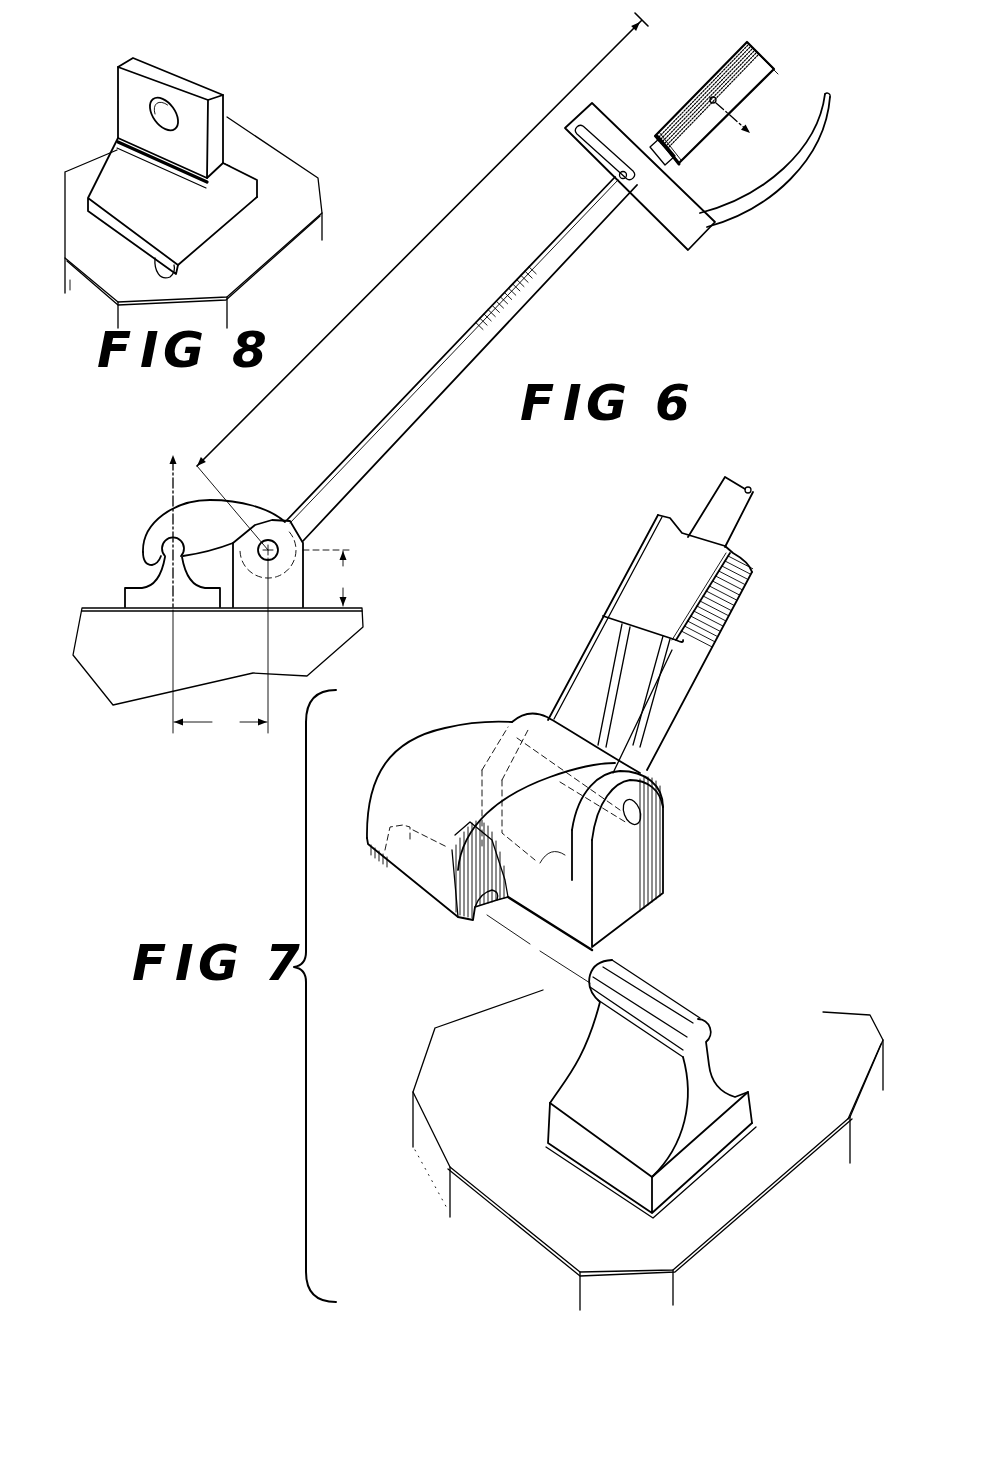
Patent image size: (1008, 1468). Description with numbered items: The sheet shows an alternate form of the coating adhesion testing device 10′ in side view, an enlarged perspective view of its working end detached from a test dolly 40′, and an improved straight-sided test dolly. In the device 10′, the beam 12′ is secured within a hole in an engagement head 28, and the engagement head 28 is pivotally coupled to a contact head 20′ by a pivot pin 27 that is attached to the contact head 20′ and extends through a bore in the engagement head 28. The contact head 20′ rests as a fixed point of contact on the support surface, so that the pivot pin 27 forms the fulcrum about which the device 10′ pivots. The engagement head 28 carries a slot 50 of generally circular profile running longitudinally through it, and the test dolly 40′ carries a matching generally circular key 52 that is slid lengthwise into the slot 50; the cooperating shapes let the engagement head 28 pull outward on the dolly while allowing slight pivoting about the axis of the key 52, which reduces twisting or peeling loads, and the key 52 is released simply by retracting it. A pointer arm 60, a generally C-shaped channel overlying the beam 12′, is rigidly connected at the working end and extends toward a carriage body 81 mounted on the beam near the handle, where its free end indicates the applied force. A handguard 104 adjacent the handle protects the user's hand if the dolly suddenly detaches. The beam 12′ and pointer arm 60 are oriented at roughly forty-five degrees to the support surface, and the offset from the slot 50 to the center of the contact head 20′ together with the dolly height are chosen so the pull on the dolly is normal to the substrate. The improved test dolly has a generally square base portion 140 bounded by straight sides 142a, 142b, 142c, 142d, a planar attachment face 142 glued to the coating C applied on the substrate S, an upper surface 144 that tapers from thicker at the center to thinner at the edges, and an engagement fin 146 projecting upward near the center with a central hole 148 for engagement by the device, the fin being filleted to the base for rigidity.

In FIG. 6, the testing device 10′ is at (513, 281).
In FIG. 6, the beam 12′ is at (652, 147).
In FIG. 7, the beam 12′ is at (748, 488).
In FIG. 6, the contact head 20′ is at (305, 538).
In FIG. 7, the contact head 20′ is at (650, 862).
In FIG. 6, the pivot pin 27 is at (276, 541).
In FIG. 7, the pivot pin 27 is at (641, 814).
In FIG. 6, the engagement head 28 is at (162, 520).
In FIG. 7, the engagement head 28 is at (430, 765).
In FIG. 6, the test dolly 40′ is at (146, 579).
In FIG. 7, the test dolly 40′ is at (658, 1078).
In FIG. 7, the slot 50 is at (483, 916).
In FIG. 7, the key 52 is at (655, 998).
In FIG. 6, the pointer arm 60 is at (450, 357).
In FIG. 7, the pointer arm 60 is at (723, 611).
In FIG. 6, the carriage body 81 is at (600, 168).
In FIG. 6, the handguard 104 is at (774, 182).
In FIG. 8, the base portion 140 is at (223, 197).
In FIG. 8, the attachment face 142 is at (130, 247).
In FIG. 8, the side of base portion 142a is at (276, 256).
In FIG. 8, the side of base portion 142b is at (158, 267).
In FIG. 8, the side of base portion 142c is at (118, 148).
In FIG. 8, the side of base portion 142d is at (233, 162).
In FIG. 8, the upper surface 144 is at (172, 217).
In FIG. 8, the engagement fin 146 is at (193, 87).
In FIG. 8, the hole 148 is at (145, 122).
In FIG. 8, the coating C is at (285, 218).
In FIG. 7, the coating C is at (801, 1097).
In FIG. 8, the substrate S is at (260, 287).
In FIG. 7, the substrate S is at (812, 1167).